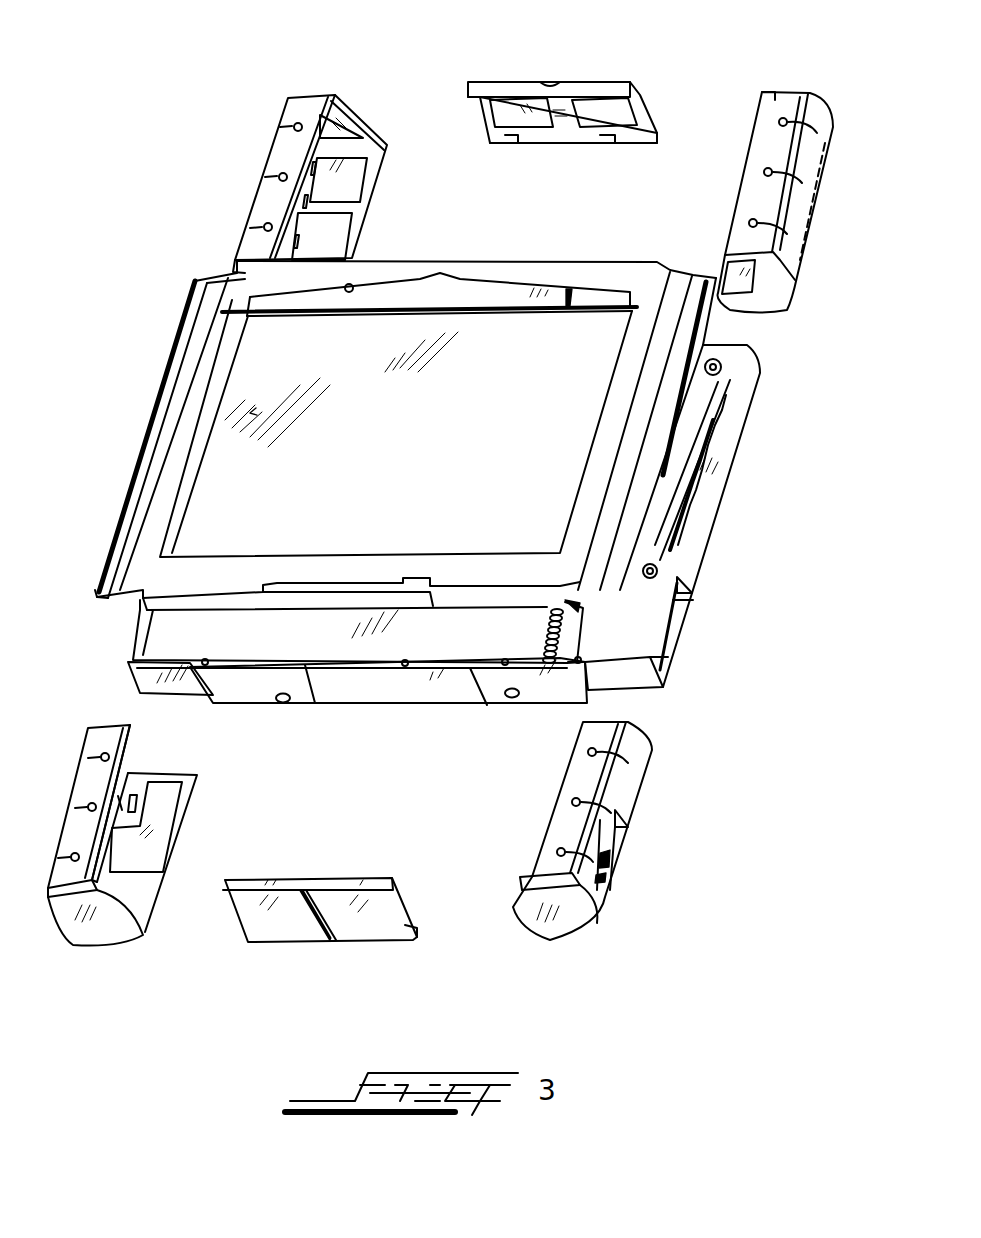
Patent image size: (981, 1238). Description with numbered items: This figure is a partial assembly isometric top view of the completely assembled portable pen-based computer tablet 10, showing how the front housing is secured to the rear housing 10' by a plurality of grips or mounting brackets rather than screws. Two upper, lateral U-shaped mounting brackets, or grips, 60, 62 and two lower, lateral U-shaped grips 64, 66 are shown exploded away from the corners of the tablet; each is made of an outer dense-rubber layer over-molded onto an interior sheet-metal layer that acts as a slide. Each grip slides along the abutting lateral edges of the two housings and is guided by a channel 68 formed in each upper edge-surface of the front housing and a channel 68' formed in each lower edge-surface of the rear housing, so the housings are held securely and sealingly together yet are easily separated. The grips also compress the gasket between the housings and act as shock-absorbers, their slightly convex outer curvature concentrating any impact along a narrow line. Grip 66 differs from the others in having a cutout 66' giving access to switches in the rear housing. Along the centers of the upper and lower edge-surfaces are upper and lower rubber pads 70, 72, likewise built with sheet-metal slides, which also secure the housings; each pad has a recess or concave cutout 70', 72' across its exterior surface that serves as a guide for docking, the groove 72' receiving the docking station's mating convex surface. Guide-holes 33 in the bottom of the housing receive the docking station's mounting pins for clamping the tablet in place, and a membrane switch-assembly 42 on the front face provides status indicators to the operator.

The portable pen-based computer tablet 10 is at (393, 462).
The rear housing-portion 10' is at (310, 652).
The guide-holes 33 is at (285, 703).
The membrane switch-assembly 42 is at (565, 298).
The upper lateral U-shaped mounting bracket or grip 60 is at (287, 162).
The upper lateral U-shaped mounting bracket or grip 62 is at (807, 210).
The lower lateral U-shaped mounting bracket or grip 64 is at (87, 783).
The lower lateral U-shaped mounting bracket or grip 66 is at (617, 831).
The cutout 66' is at (645, 875).
The channel 68 is at (429, 431).
The channel 68' is at (434, 668).
The upper rubber pad 70 is at (522, 84).
The recess or concave cutout 70' is at (558, 43).
The lower rubber pad 72 is at (343, 895).
The recess or concave cutout 72' is at (331, 946).